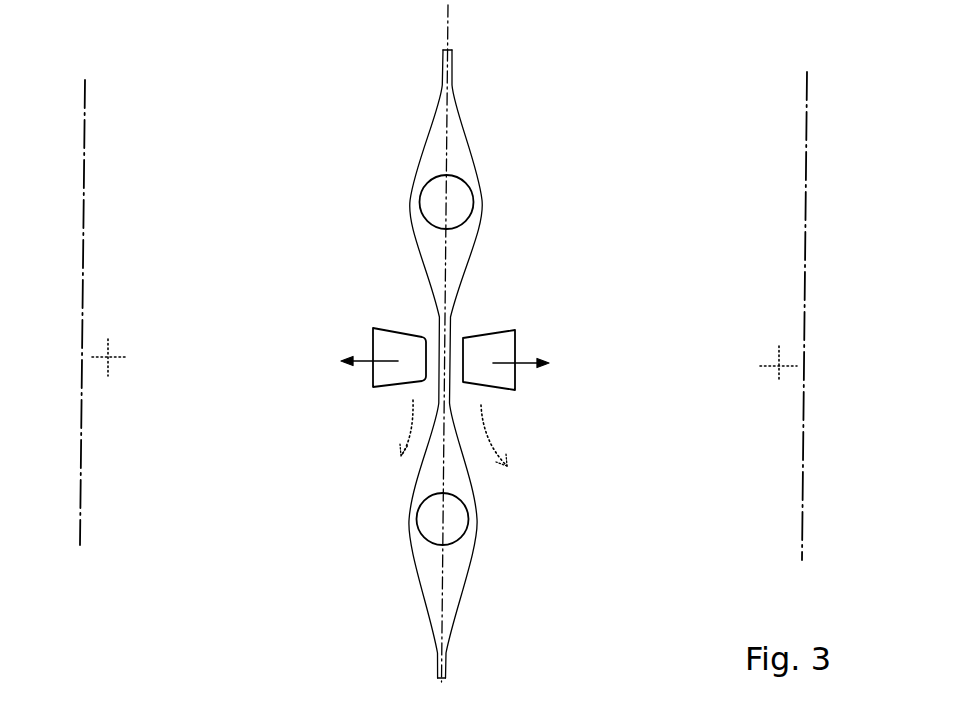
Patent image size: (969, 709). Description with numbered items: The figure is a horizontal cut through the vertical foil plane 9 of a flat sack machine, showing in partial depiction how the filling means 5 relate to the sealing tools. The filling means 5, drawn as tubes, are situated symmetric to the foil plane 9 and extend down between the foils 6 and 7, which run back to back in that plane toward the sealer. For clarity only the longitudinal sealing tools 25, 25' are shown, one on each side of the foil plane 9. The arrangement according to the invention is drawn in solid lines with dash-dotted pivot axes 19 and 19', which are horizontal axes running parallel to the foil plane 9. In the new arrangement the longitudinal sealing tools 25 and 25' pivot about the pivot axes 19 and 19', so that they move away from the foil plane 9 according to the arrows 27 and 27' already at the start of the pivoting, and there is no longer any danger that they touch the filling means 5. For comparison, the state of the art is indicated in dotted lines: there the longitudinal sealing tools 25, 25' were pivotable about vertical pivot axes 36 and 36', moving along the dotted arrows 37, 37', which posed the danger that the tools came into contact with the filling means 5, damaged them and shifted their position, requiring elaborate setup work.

The filling means 5 is at (422, 185).
The foil 6 is at (428, 132).
The foil 7 is at (463, 127).
The foil plane 9 is at (447, 155).
The pivot axis 19 is at (110, 312).
The pivot axis 19' is at (765, 316).
The longitudinal sealing tool 25 is at (381, 312).
The longitudinal sealing tool 25' is at (510, 315).
The arrow 27 is at (339, 302).
The arrow 27' is at (561, 304).
The vertical pivot axis 36 is at (127, 306).
The vertical pivot axis 36' is at (769, 313).
The dotted arrow 37 is at (363, 435).
The dotted arrow 37' is at (545, 440).